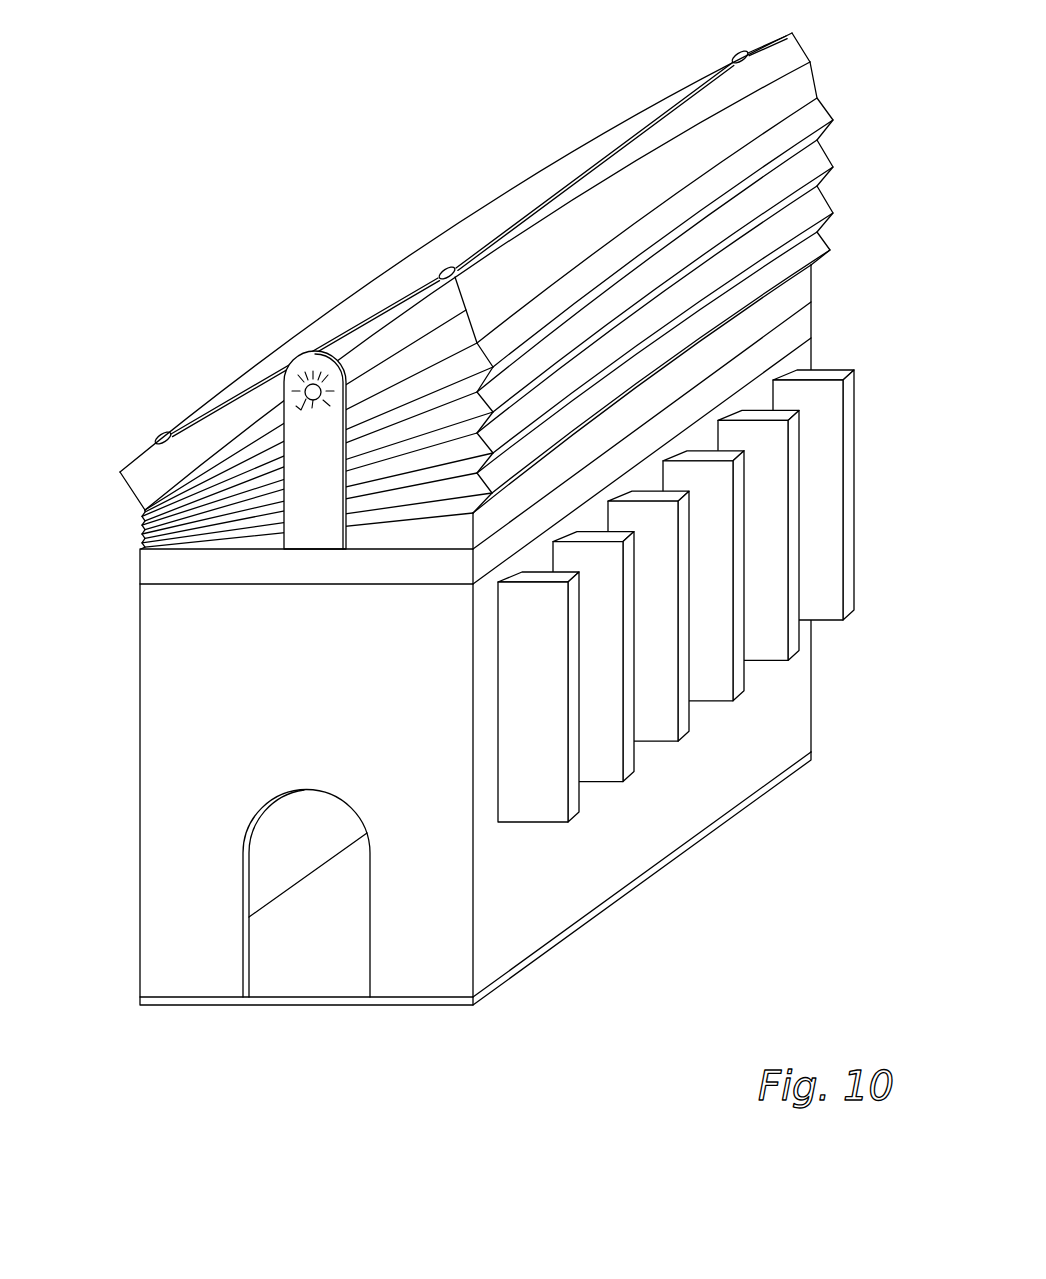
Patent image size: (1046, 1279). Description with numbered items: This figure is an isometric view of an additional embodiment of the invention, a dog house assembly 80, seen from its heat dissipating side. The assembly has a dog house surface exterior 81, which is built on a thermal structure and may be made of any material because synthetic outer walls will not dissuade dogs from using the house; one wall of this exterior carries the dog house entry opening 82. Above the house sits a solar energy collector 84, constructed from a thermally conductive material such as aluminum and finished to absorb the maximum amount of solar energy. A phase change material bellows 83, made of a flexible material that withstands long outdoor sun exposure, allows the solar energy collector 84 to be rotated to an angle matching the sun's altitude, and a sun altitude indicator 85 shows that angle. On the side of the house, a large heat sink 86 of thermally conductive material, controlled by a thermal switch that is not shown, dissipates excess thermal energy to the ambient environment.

The additional embodiment dog house assembly 80 is at (557, 1056).
The dog house surface exterior 81 is at (140, 674).
The dog house entry opening 82 is at (318, 955).
The phase change material bellows 83 is at (143, 531).
The solar energy collector 84 is at (398, 280).
The sun altitude indicator 85 is at (258, 392).
The large heat sink 86 is at (848, 611).